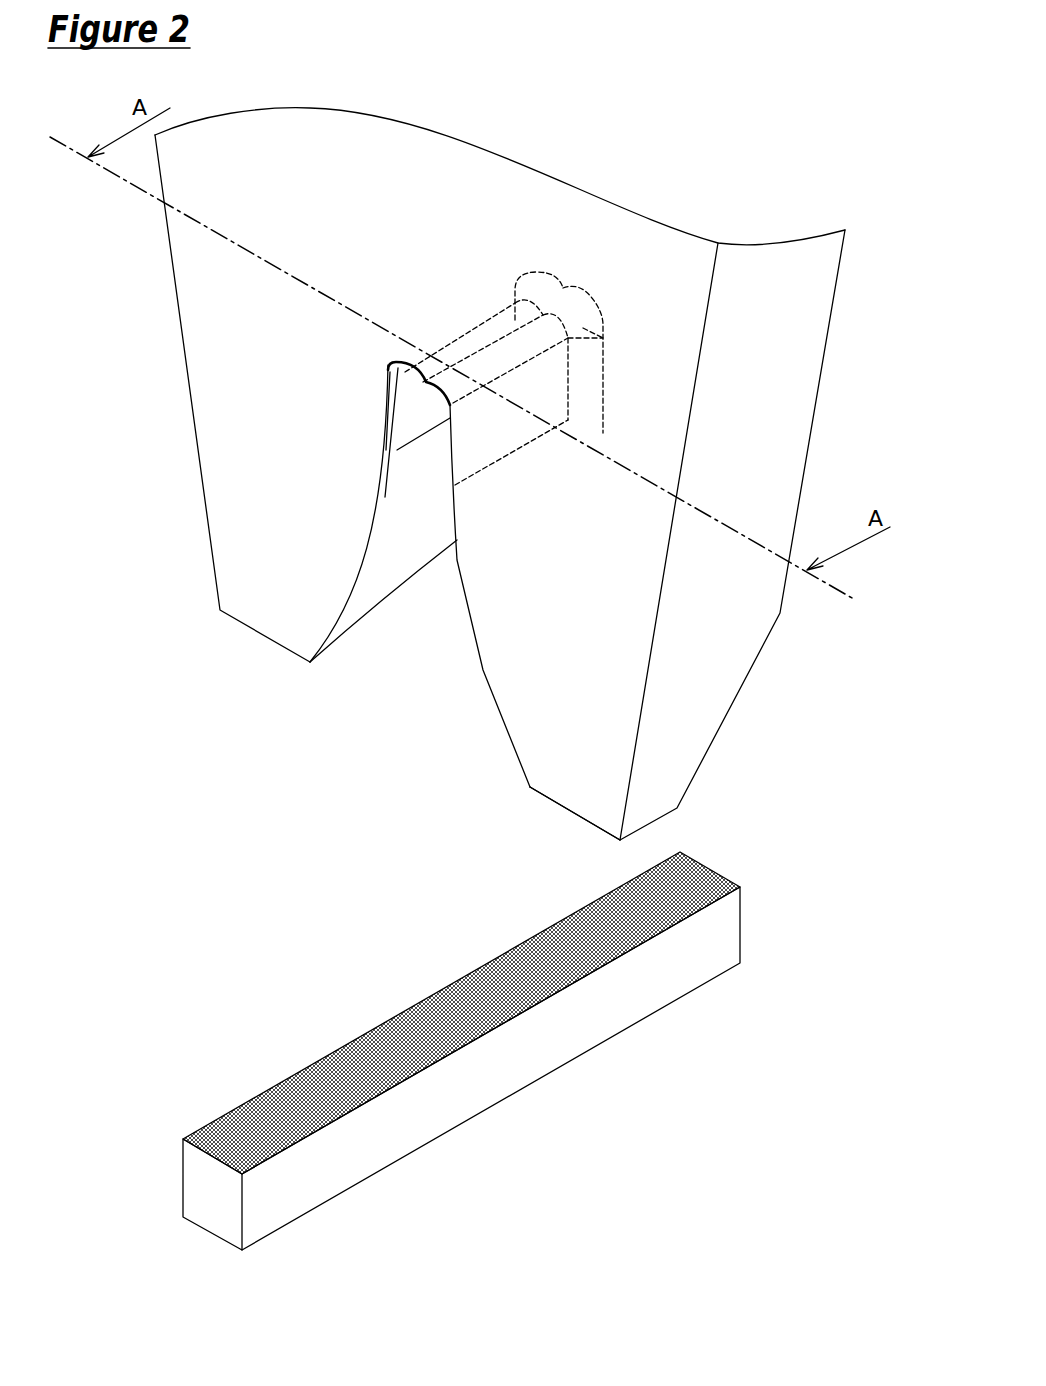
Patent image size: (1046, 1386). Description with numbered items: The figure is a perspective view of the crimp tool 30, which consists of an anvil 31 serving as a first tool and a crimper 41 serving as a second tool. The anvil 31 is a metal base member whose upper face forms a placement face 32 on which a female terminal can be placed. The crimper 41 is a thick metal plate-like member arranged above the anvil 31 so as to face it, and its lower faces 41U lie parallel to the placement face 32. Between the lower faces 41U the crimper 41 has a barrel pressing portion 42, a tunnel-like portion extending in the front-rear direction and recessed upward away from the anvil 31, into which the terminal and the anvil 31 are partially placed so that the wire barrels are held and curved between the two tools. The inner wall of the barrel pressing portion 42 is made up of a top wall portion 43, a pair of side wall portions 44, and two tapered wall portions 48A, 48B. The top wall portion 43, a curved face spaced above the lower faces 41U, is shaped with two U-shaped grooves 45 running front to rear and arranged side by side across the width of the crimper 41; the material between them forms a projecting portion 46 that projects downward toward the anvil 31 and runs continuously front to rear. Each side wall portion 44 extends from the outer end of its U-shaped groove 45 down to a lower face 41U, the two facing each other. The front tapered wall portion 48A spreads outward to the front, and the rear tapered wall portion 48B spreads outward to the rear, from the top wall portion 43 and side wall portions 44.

The crimp tool 30 is at (232, 788).
The anvil 31 is at (461, 1051).
The placement face 32 is at (427, 1020).
The crimper 41 is at (281, 675).
The lower faces 41U is at (570, 812).
The barrel pressing portion 42 is at (423, 654).
The top wall portion 43 is at (698, 105).
The side wall portions 44 is at (383, 590).
The U-shaped grooves 45 is at (515, 300).
The projecting portion 46 is at (423, 382).
The front tapered wall portion 48A is at (394, 407).
The rear tapered wall portion 48B is at (583, 328).